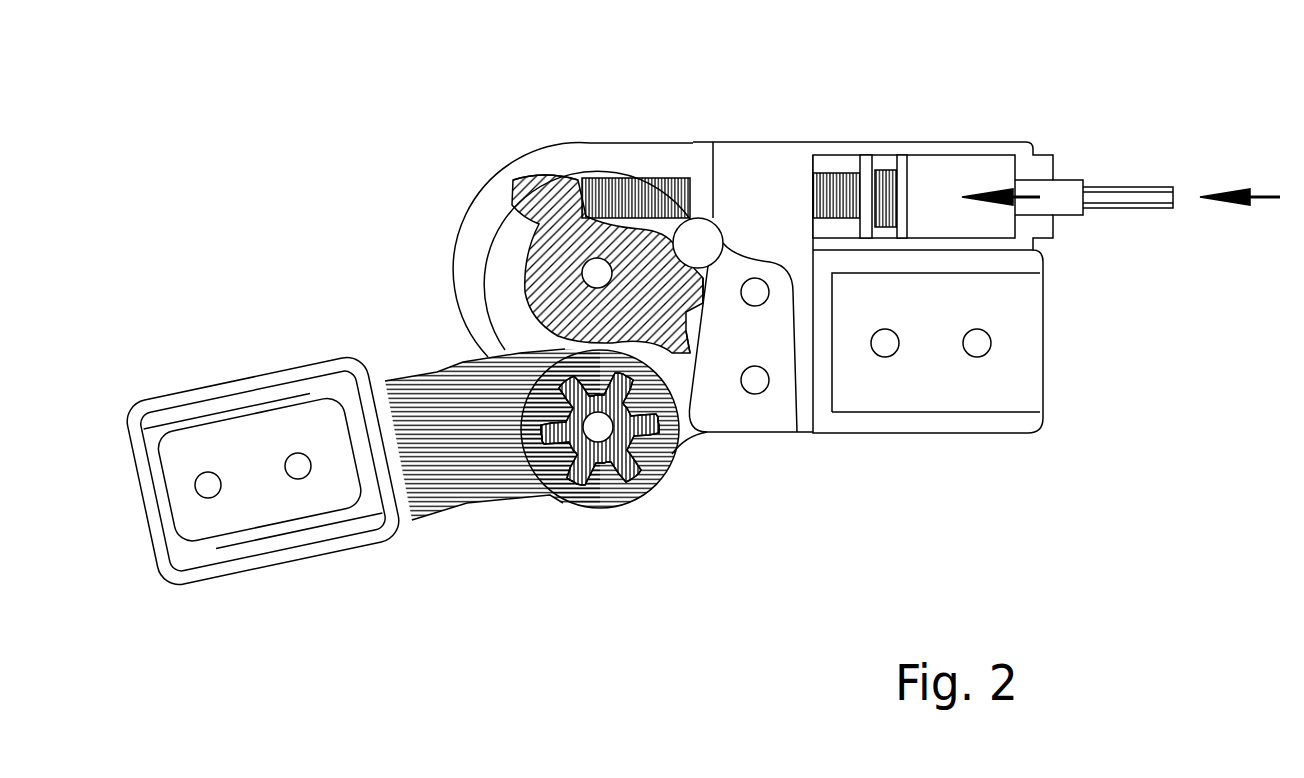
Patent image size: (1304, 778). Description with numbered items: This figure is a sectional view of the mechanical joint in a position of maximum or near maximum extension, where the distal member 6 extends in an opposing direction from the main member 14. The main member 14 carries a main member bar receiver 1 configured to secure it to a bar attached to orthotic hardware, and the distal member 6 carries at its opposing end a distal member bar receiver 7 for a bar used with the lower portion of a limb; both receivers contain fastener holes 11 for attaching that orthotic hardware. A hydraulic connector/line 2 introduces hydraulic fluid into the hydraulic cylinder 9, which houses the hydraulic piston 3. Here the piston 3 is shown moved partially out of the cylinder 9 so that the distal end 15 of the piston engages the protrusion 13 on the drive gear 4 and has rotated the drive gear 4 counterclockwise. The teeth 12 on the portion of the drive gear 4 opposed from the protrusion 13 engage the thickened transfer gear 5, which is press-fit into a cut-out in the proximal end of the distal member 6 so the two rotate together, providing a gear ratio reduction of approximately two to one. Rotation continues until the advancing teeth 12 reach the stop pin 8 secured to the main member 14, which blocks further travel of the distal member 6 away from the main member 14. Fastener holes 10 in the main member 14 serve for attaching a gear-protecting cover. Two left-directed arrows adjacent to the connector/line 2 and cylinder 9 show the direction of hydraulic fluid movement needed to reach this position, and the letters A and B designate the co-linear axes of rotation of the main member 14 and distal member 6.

The main member bar receiver 1 is at (1046, 344).
The hydraulic connector/line 2 is at (1119, 187).
The hydraulic piston 3 is at (640, 190).
The drive gear 4 is at (545, 273).
The thickened transfer gear 5 is at (635, 465).
The distal member 6 is at (437, 496).
The distal member bar receiver 7 is at (163, 385).
The stop pin 8 is at (698, 240).
The hydraulic cylinder 9 is at (953, 190).
The fastener holes 10 is at (757, 297).
The fastener holes 11 is at (885, 345).
The teeth 12 is at (702, 300).
The protrusion 13 is at (568, 180).
The main member 14 is at (745, 170).
The distal end of piston 15 is at (538, 205).
The axis of rotation of main member A is at (593, 270).
The axis of rotation of distal member B is at (600, 438).